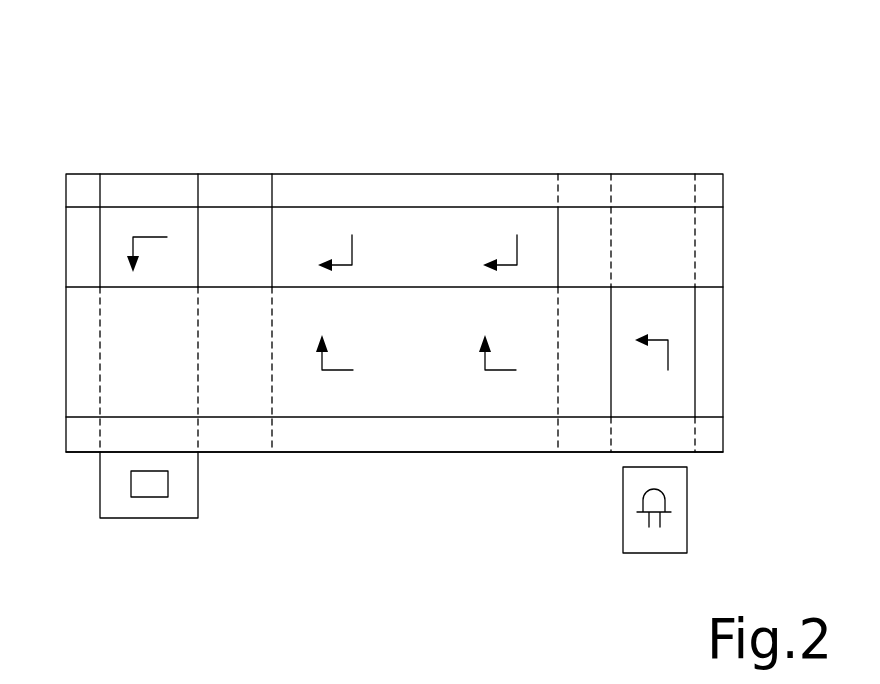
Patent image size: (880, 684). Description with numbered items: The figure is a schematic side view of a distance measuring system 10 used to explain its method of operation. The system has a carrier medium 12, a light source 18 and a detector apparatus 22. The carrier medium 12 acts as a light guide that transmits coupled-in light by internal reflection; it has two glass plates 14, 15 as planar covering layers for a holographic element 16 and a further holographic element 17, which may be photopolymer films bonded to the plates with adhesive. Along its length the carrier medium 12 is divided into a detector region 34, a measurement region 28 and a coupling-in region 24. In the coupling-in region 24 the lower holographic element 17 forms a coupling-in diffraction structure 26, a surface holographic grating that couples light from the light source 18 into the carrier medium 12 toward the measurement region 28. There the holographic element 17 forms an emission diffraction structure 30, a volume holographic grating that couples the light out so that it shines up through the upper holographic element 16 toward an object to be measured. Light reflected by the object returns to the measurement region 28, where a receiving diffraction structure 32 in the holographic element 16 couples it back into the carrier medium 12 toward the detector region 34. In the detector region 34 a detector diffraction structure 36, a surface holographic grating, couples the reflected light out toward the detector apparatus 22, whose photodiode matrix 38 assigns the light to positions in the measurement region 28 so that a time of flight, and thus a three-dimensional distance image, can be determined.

The distance measuring system 10 is at (116, 96).
The carrier medium 12 is at (62, 173).
The glass plate 14 is at (708, 192).
The glass plate 15 is at (708, 436).
The holographic element 16 is at (731, 208).
The further holographic element 17 is at (731, 288).
The light source 18 is at (687, 508).
The detector apparatus 22 is at (198, 481).
The coupling-in region 24 is at (695, 172).
The coupling-in diffraction structure 26 is at (622, 403).
The measurement region 28 is at (558, 172).
The emission diffraction structure 30 is at (407, 400).
The receiving diffraction structure 32 is at (282, 238).
The detector region 34 is at (197, 172).
The detector diffraction structure 36 is at (111, 238).
The photodiode matrix 38 is at (130, 482).